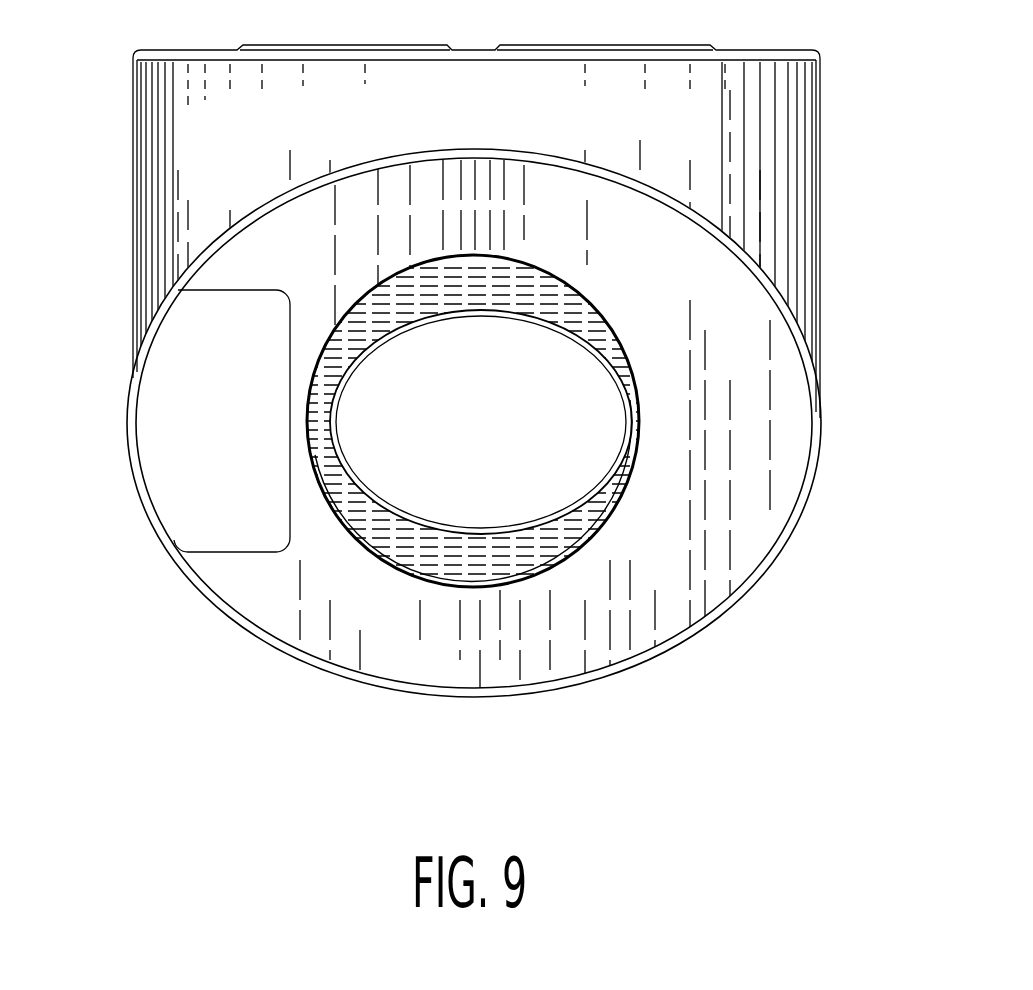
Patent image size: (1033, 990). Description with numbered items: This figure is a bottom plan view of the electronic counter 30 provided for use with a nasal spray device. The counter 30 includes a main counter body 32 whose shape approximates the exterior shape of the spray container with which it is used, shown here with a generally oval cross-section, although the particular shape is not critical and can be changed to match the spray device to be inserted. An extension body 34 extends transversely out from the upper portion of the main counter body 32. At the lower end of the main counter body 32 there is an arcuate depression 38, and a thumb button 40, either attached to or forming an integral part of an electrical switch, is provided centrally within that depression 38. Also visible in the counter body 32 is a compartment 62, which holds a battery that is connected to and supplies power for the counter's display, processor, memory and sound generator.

The electronic counter 30 is at (836, 119).
The main counter body 32 is at (205, 596).
The extension body 34 is at (136, 83).
The arcuate depression 38 is at (772, 404).
The thumb button 40 is at (397, 464).
The compartment 62 is at (170, 540).